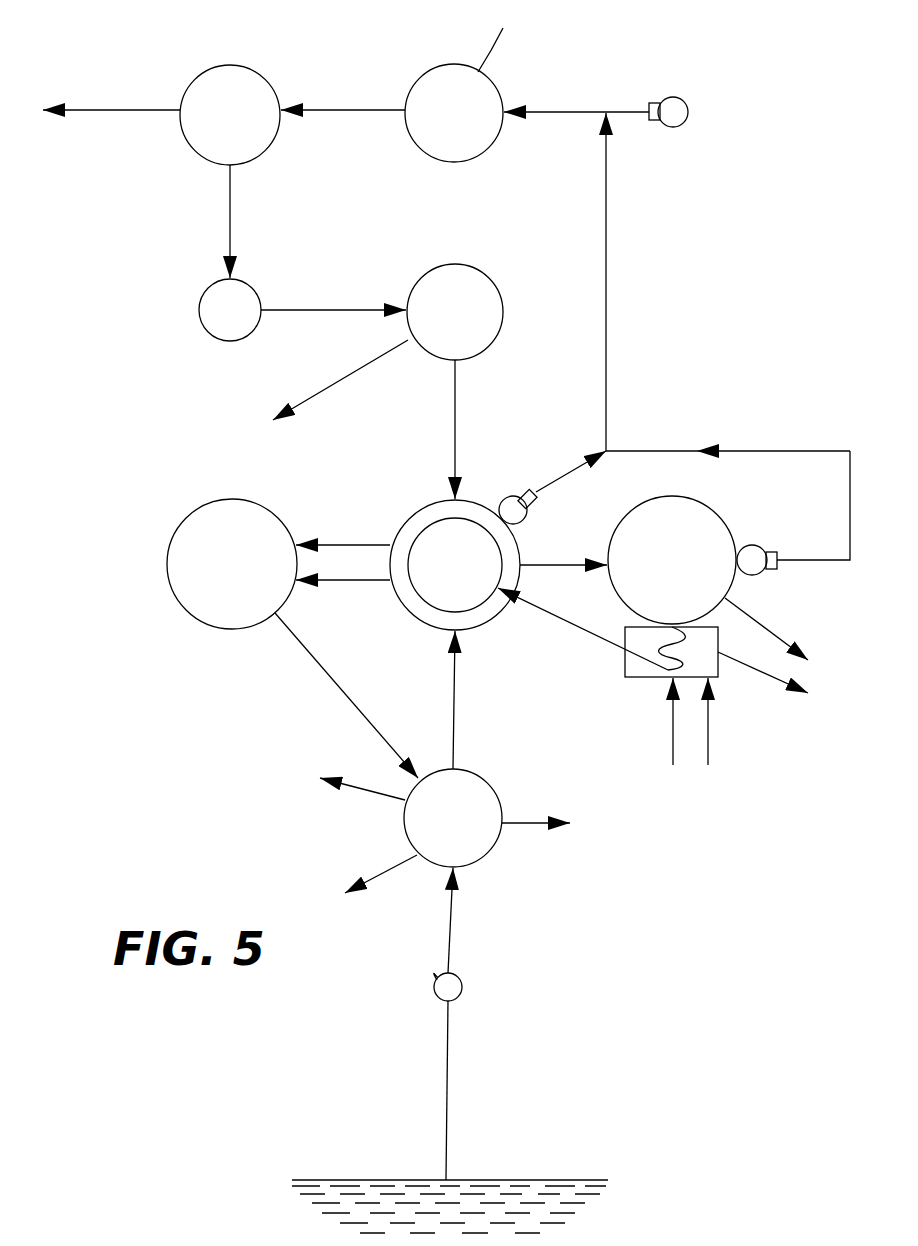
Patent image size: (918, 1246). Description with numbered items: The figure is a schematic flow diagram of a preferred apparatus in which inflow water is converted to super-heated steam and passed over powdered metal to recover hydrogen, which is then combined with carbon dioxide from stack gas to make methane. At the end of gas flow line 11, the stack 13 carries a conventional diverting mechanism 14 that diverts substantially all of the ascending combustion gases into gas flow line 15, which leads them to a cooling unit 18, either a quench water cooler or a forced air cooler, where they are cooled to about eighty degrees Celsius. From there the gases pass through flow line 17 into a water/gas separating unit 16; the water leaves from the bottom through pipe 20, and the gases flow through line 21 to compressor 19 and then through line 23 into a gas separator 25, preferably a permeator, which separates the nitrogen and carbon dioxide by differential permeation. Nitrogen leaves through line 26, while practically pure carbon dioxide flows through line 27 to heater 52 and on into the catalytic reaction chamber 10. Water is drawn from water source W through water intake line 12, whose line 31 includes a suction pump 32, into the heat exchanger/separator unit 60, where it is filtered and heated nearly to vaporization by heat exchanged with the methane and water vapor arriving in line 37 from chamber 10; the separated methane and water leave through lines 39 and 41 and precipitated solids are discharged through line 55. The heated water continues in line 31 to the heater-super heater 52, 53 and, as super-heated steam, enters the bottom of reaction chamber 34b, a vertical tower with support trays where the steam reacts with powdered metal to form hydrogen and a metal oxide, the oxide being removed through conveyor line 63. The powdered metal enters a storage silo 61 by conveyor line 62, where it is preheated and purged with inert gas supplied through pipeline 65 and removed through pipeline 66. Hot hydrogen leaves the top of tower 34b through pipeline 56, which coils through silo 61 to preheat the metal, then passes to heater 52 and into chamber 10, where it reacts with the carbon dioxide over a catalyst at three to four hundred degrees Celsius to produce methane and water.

The catalytic reaction chamber 10 is at (174, 530).
The gas flow line 11 is at (507, 40).
The water intake line 12 is at (462, 988).
The stack 13 is at (686, 100).
The diverting mechanism 14 is at (650, 104).
The gas flow line 15 is at (558, 114).
The water/gas separating unit 16 is at (228, 65).
The flow line 17 is at (362, 108).
The cooling unit 18 is at (442, 66).
The compressor 19 is at (201, 296).
The pipe 20 is at (130, 108).
The line 21 is at (228, 212).
The line 23 is at (331, 308).
The gas separator 25 is at (430, 268).
The line 26 is at (343, 380).
The line 27 is at (457, 406).
The line 31 is at (548, 568).
The suction pump 32 is at (438, 978).
The reaction chamber 34b is at (720, 512).
The line 37 is at (322, 672).
The line 39 is at (384, 798).
The line 41 is at (398, 862).
The heater 52 is at (424, 600).
The super heater 53 is at (437, 628).
The line 55 is at (532, 822).
The pipeline 56 is at (354, 584).
The heat exchanger/separator unit 60 is at (488, 856).
The storage silo 61 is at (718, 670).
The conveyor line 62 is at (710, 740).
The conveyor line 63 is at (770, 636).
The pipeline 65 is at (672, 722).
The pipeline 66 is at (778, 684).
The water source W is at (580, 1178).